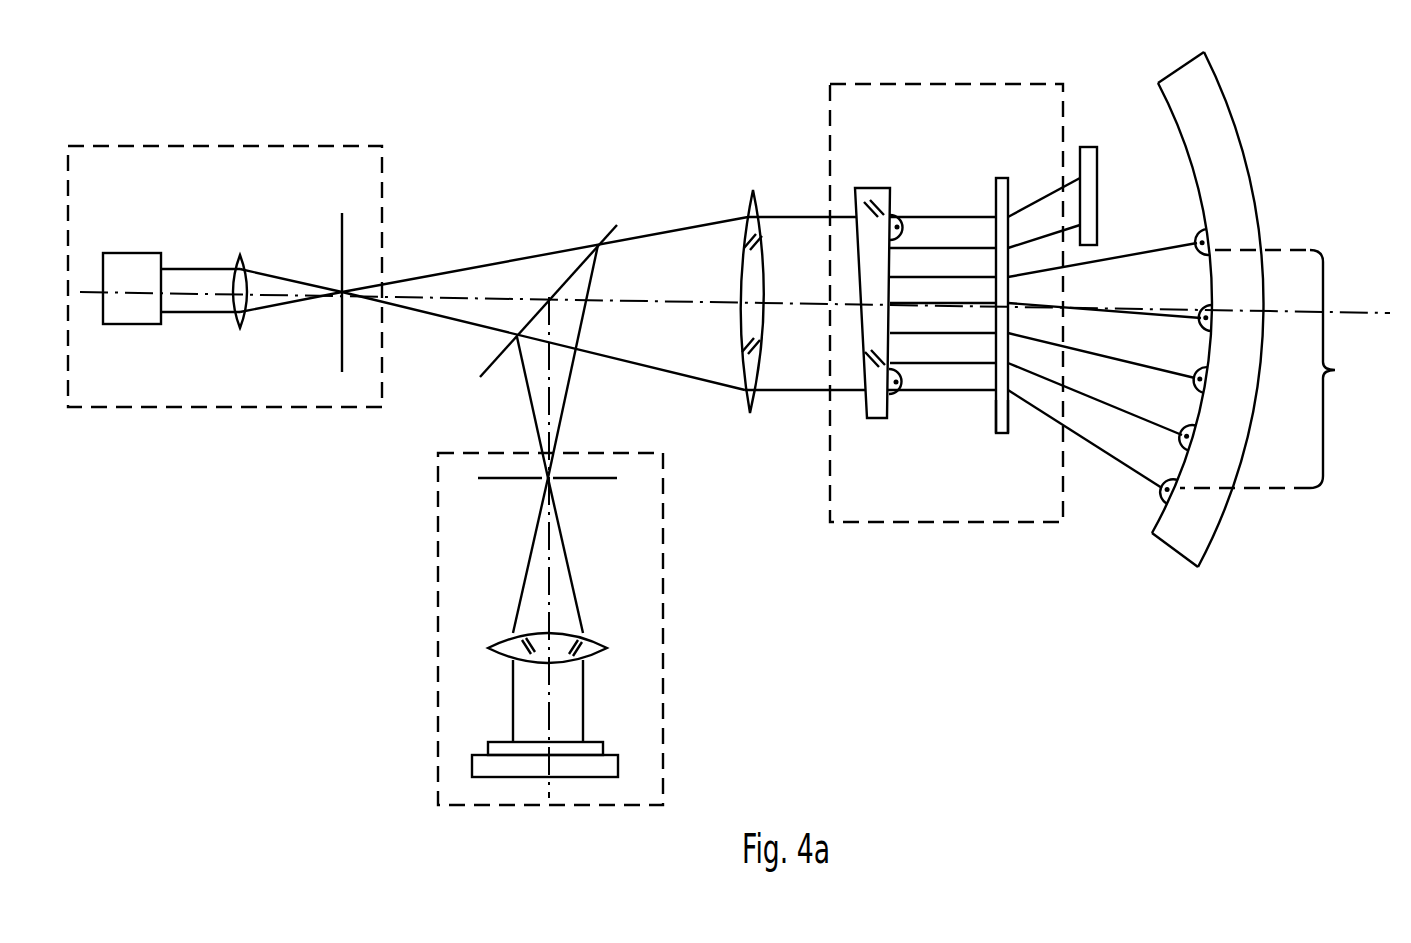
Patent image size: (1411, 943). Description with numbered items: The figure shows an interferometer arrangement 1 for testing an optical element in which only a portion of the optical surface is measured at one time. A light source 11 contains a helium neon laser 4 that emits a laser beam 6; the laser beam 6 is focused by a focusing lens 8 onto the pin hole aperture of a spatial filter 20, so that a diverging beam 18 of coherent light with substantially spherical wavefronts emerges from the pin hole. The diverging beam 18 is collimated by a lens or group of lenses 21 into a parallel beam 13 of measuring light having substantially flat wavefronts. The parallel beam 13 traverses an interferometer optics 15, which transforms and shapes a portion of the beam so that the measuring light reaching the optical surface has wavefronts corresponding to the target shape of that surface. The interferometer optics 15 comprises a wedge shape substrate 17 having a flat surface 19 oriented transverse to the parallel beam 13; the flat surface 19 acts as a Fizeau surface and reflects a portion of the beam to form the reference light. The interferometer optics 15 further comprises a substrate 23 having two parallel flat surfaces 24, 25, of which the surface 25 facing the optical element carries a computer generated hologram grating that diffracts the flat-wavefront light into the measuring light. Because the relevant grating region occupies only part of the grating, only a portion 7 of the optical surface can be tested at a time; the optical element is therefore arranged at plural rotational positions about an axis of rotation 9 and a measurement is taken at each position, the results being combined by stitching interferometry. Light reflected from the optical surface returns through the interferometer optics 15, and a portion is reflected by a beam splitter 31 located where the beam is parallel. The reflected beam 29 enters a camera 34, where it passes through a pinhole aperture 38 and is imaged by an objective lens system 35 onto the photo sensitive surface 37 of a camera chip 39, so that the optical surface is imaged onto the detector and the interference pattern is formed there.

The interferometer arrangement 1 is at (551, 113).
The light source 11 is at (206, 146).
The helium neon laser 4 is at (133, 253).
The laser beam 6 is at (195, 269).
The focusing lens 8 is at (241, 256).
The spatial filter 20 is at (338, 238).
The diverging beam 18 is at (485, 264).
The beam splitter 31 is at (615, 222).
The reflected beam 29 is at (566, 404).
The lens or group of lenses 21 is at (745, 205).
The parallel beam of measuring light 13 is at (803, 215).
The interferometer optics 15 is at (938, 84).
The wedge shape substrate 17 is at (871, 188).
The flat surface 19 is at (893, 418).
The substrate 23 is at (1000, 178).
The grating surface 24 is at (991, 420).
The grating surface 25 is at (1013, 420).
The portion of the optical surface 7 is at (1266, 369).
The axis of rotation 9 is at (1360, 312).
The camera 34 is at (436, 568).
The pinhole aperture 38 is at (503, 480).
The objective lens system 35 is at (590, 640).
The photo sensitive surface 37 is at (596, 742).
The camera chip 39 is at (612, 757).